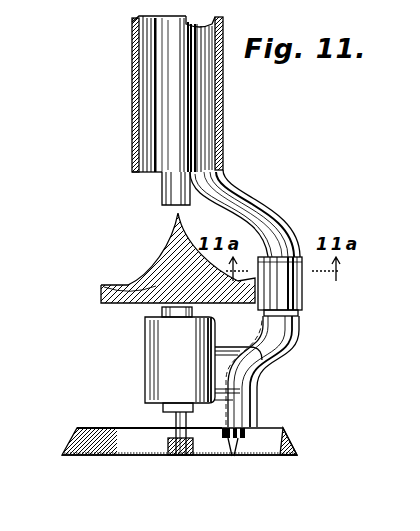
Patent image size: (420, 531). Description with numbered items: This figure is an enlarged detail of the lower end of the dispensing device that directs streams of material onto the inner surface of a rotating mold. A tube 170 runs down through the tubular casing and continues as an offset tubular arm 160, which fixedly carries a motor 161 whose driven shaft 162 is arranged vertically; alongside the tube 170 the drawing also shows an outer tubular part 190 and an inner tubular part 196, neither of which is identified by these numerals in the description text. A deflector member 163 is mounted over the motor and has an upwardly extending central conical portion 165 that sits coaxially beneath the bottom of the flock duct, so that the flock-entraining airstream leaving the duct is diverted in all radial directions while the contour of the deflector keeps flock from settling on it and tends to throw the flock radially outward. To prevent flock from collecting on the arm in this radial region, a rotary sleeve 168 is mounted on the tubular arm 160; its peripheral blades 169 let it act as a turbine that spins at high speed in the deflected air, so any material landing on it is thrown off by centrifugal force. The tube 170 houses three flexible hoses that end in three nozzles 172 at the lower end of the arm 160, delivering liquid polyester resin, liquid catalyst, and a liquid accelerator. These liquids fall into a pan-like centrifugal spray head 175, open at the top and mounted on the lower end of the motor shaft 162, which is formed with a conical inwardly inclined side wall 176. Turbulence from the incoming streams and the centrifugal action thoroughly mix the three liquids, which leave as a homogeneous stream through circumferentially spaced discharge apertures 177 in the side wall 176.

The outer tube 190 is at (131, 117).
The tube 170 is at (207, 114).
The inner tube 196 is at (161, 188).
The tubular arm 160 is at (270, 204).
The central conical portion 165 is at (168, 248).
The deflector member 163 is at (101, 292).
The rotary sleeve 168 is at (300, 307).
The peripheral blades 169 is at (304, 305).
The motor 161 is at (151, 377).
The driven shaft 162 is at (179, 458).
The nozzles 172 is at (232, 458).
The centrifugal spray head 175 is at (273, 458).
The side wall 176 is at (288, 433).
The discharge apertures 177 is at (62, 455).